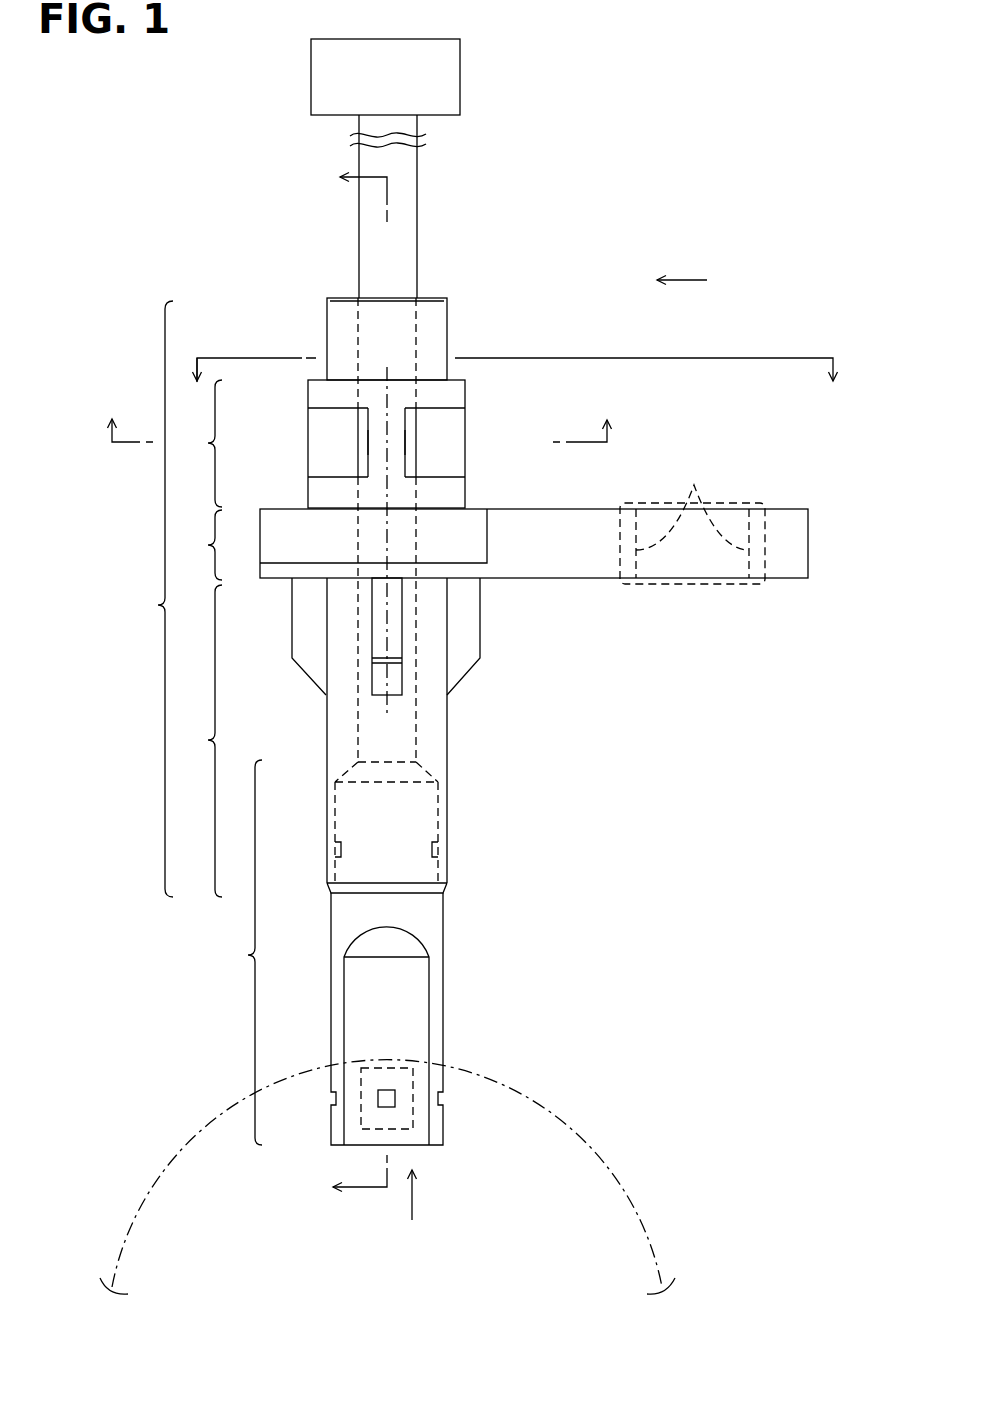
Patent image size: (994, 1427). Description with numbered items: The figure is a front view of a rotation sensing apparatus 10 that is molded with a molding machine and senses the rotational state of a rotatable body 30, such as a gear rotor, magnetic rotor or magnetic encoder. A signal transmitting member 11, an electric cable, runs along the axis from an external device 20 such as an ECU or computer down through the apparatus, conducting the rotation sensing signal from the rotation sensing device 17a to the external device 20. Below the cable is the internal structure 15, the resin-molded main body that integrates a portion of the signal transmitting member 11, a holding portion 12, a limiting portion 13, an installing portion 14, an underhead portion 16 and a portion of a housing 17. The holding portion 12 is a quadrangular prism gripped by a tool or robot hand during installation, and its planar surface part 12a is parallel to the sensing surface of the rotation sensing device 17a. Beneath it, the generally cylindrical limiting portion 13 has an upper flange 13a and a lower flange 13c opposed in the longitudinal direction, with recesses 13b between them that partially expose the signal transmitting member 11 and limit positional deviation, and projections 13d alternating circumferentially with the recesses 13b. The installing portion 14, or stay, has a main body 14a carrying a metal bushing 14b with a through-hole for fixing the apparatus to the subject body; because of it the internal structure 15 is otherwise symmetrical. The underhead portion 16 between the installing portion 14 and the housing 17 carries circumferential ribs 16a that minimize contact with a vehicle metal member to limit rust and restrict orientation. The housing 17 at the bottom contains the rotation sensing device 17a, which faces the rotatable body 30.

The rotation sensing apparatus 10 is at (217, 160).
The signal transmitting member 11 is at (368, 246).
The holding portion 12 is at (322, 325).
The planar surface part 12a is at (410, 325).
The limiting portion 13 is at (318, 444).
The flange 13a is at (325, 396).
The recess 13b is at (335, 409).
The flange 13c is at (325, 497).
The projection 13d is at (393, 447).
The installing portion 14 is at (490, 544).
The main body 14a is at (545, 530).
The bushing 14b is at (692, 517).
The internal structure 15 is at (465, 599).
The underhead portion 16 is at (326, 737).
The rib 16a is at (465, 642).
The housing 17 is at (327, 952).
The rotation sensing device 17a is at (402, 1083).
The external device 20 is at (461, 84).
The rotatable body 30 is at (553, 1118).